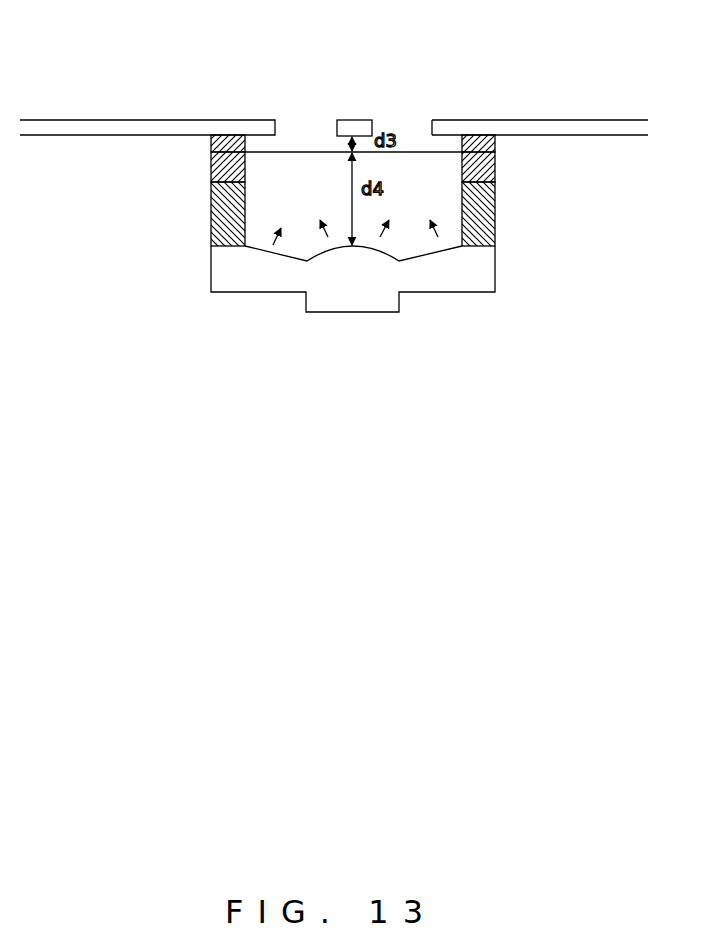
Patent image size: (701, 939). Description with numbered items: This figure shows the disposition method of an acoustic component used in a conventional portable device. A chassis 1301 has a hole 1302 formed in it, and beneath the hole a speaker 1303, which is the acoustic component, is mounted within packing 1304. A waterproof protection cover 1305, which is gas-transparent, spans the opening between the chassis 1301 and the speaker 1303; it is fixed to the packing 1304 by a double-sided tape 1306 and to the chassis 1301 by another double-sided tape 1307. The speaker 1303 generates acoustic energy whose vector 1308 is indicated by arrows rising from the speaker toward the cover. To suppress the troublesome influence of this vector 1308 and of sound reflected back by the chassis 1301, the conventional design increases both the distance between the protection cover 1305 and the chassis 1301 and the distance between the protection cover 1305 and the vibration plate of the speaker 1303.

The chassis 1301 is at (507, 120).
The hole 1302 is at (406, 142).
The speaker 1303 is at (495, 277).
The packing 1304 is at (211, 222).
The waterproof protection cover 1305 is at (315, 152).
The double-sided tape 1306 is at (211, 168).
The double-sided tape 1307 is at (211, 139).
The vector of acoustic energy 1308 is at (482, 210).